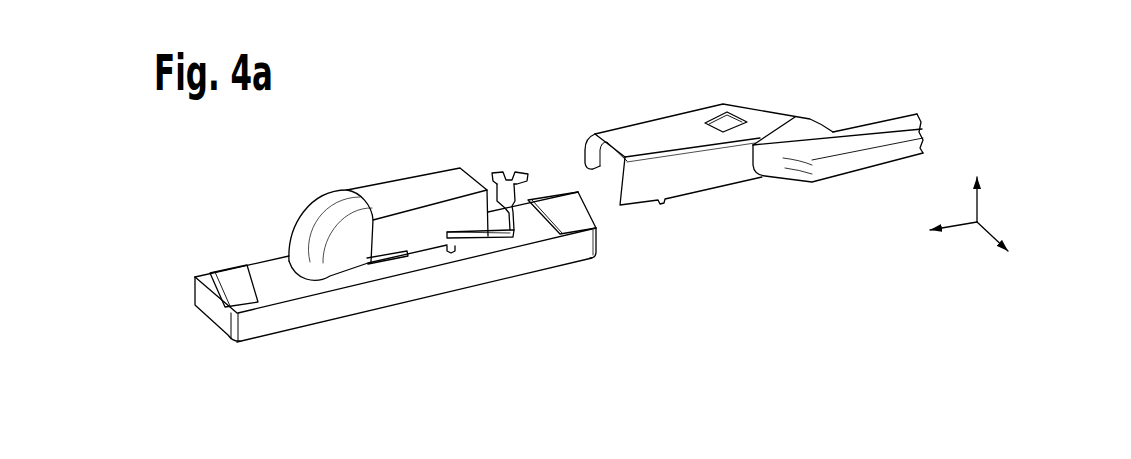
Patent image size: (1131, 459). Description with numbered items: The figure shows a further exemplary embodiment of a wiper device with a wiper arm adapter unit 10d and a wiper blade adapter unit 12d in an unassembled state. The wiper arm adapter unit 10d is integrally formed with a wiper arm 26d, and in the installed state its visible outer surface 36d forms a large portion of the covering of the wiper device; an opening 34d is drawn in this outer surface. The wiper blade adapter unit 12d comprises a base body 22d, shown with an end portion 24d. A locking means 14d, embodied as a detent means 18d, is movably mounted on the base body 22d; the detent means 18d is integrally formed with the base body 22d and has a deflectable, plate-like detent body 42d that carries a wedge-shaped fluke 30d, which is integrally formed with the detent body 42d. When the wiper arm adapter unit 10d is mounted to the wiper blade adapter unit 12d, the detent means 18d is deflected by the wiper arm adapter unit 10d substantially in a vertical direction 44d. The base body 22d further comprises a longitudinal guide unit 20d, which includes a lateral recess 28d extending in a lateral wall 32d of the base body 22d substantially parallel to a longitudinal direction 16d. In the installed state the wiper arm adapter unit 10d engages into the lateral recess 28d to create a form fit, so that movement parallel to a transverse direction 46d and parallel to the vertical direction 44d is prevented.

The wiper arm adapter unit 10d is at (678, 104).
The wiper blade adapter unit 12d is at (262, 223).
The locking means 14d is at (474, 165).
The longitudinal direction 16d is at (953, 222).
The detent means 18d is at (515, 199).
The longitudinal guide unit 20d is at (518, 284).
The base body 22d is at (374, 193).
The end portion of base body 24d is at (213, 313).
The wiper arm 26d is at (880, 130).
The lateral recess 28d is at (418, 258).
The fluke 30d is at (497, 238).
The lateral wall 32d is at (457, 238).
The opening 34d is at (736, 114).
The visible outer surface 36d is at (637, 132).
The detent body 42d is at (508, 171).
The vertical direction 44d is at (978, 190).
The transverse direction 46d is at (997, 235).